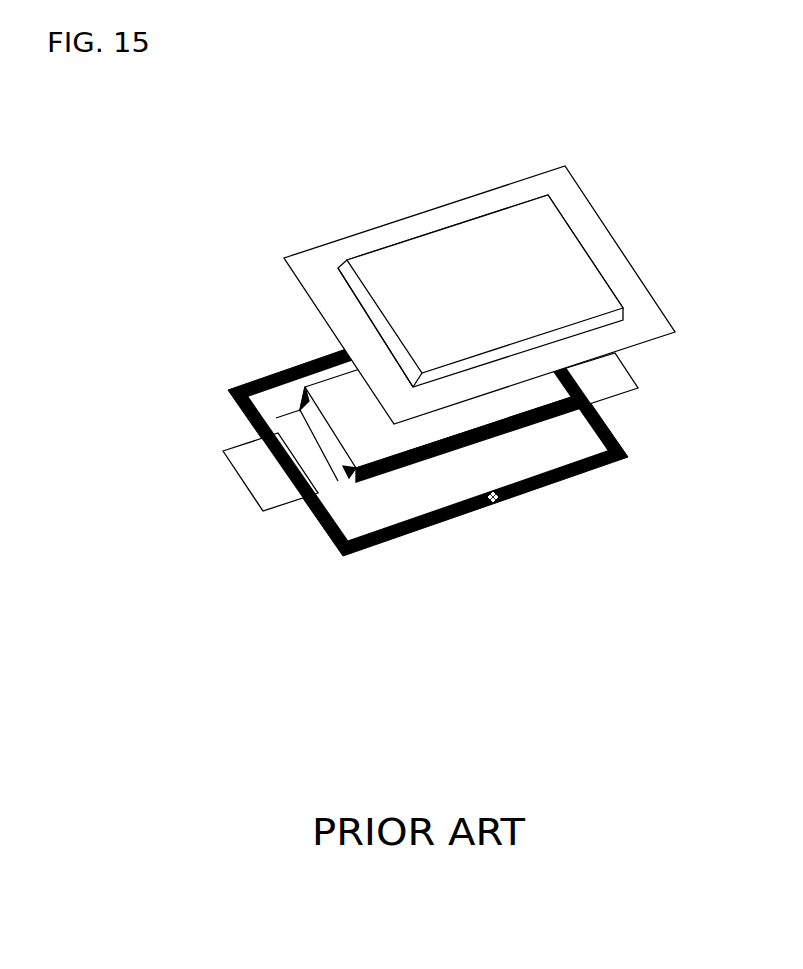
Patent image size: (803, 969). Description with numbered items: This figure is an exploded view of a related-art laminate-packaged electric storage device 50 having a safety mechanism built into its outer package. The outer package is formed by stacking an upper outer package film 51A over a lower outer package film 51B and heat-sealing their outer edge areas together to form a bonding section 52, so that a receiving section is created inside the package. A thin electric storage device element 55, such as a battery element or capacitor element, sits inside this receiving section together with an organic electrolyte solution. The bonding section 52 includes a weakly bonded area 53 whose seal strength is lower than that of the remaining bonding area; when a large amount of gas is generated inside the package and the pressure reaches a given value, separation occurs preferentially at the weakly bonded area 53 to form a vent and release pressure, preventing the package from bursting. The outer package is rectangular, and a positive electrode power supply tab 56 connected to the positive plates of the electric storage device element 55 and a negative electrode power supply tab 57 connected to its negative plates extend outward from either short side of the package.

The laminate-packaged electric storage device 50 is at (240, 250).
The upper outer package film 51A is at (357, 231).
The lower outer package film 51B is at (423, 520).
The bonding section 52 is at (330, 538).
The weakly bonded area 53 is at (494, 498).
The electric storage device element 55 is at (575, 481).
The positive electrode power supply tab 56 is at (237, 473).
The negative electrode power supply tab 57 is at (638, 390).